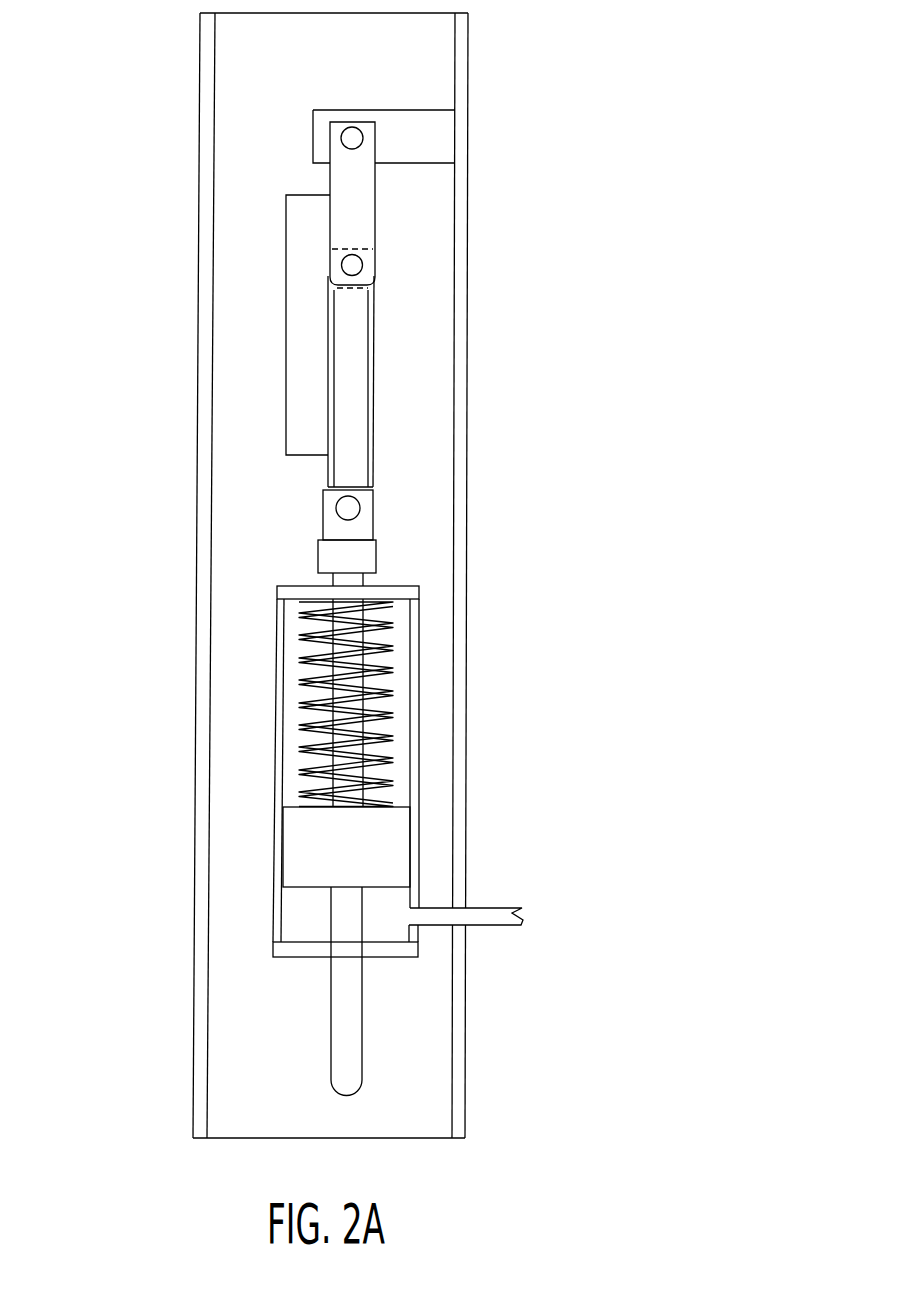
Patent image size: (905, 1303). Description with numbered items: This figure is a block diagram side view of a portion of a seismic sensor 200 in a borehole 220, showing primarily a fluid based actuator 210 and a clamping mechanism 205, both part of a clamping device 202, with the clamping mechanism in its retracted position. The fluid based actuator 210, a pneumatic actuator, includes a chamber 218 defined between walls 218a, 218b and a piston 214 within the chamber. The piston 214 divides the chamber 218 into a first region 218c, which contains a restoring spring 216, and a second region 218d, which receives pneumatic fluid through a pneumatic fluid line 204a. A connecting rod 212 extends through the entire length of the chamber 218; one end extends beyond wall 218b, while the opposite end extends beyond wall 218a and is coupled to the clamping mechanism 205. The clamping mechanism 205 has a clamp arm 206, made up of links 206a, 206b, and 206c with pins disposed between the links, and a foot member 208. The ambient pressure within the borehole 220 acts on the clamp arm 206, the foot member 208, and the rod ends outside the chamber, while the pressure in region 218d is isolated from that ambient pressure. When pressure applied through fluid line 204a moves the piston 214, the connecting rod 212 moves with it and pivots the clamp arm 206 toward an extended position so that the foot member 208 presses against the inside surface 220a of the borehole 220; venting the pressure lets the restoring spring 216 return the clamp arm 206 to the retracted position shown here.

The seismic sensor 200 is at (436, 314).
The clamping device 202 is at (306, 537).
The pneumatic fluid line 204a is at (488, 913).
The clamping mechanism 205 is at (311, 468).
The clamp arm 206 is at (385, 287).
The link 206a is at (342, 182).
The link 206b is at (360, 423).
The link 206c is at (440, 137).
The foot member 208 is at (300, 330).
The fluid based actuator 210 is at (274, 690).
The connecting rod 212 is at (360, 580).
The piston 214 is at (393, 844).
The restoring spring 216 is at (383, 684).
The chamber 218 is at (275, 716).
The wall 218a is at (283, 594).
The wall 218b is at (282, 948).
The first region 218c is at (292, 757).
The second region 218d is at (288, 898).
The borehole 220 is at (468, 337).
The inside surface 220a is at (215, 162).